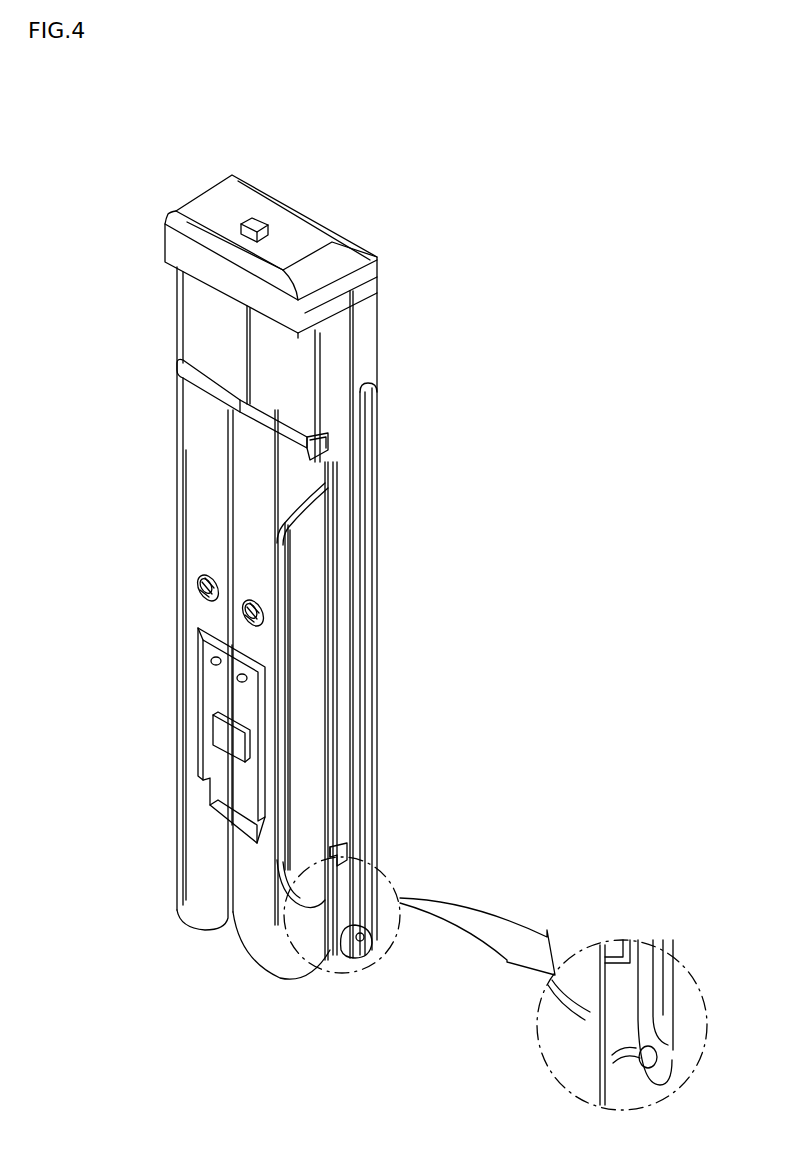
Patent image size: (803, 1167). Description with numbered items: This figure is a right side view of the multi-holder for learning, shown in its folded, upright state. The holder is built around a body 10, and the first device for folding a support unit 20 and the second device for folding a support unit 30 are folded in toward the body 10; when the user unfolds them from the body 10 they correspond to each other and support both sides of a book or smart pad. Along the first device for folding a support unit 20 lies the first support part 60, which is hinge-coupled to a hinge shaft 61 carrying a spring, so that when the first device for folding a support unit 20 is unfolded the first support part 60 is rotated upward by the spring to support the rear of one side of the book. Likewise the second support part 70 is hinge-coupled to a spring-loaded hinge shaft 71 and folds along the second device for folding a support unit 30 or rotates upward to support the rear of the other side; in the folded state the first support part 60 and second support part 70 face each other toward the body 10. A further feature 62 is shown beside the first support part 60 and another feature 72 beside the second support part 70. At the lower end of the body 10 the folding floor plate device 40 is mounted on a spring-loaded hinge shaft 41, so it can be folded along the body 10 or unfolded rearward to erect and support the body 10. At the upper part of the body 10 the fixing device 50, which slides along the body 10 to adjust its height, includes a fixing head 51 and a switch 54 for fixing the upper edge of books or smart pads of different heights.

The body 10 is at (365, 347).
The first device for folding a support unit 20 is at (288, 953).
The second device for folding a support unit 30 is at (202, 907).
The folding floor plate device 40 is at (373, 485).
The hinge shaft 41 is at (360, 940).
The fixing device 50 is at (271, 203).
The fixing head 51 is at (290, 240).
The switch 54 is at (251, 218).
The first support part 60 is at (300, 380).
The hinge shaft 61 is at (253, 615).
The guide plate 62 is at (253, 713).
The second support part 70 is at (195, 326).
The hinge shaft 71 is at (200, 585).
The bracket 72 is at (213, 692).